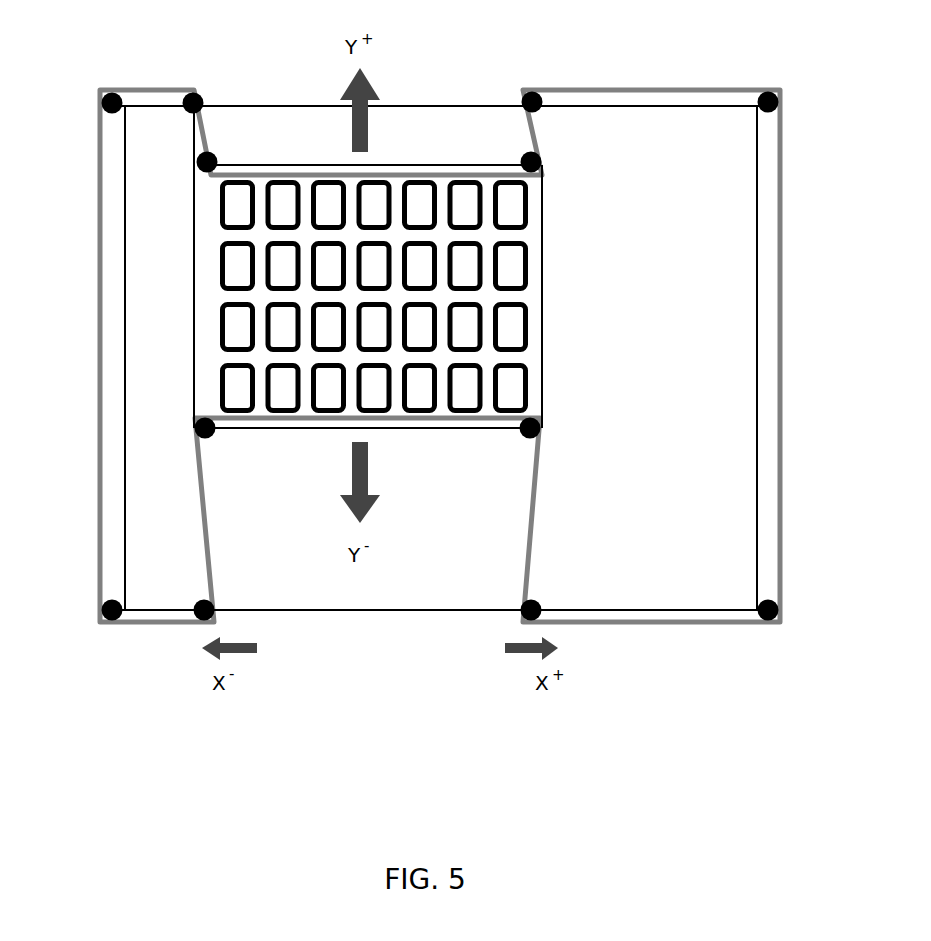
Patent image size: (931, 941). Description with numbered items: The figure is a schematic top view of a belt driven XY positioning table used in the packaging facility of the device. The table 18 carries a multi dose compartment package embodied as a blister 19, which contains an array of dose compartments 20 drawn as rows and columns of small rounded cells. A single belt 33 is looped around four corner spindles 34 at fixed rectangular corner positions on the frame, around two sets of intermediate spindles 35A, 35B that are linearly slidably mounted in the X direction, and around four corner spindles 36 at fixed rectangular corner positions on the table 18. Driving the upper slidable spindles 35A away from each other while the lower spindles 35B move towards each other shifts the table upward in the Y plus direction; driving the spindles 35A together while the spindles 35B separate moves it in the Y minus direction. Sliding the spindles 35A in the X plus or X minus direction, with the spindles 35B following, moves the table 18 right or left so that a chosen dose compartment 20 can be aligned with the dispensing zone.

The table 18 is at (207, 268).
The blister 19 is at (528, 297).
The dose compartment 20 is at (512, 208).
The belt 33 is at (537, 482).
The corner spindles 34 is at (112, 116).
The intermediate spindles 35A is at (187, 115).
The intermediate spindles 35B is at (203, 598).
The corner spindles 36 is at (210, 160).